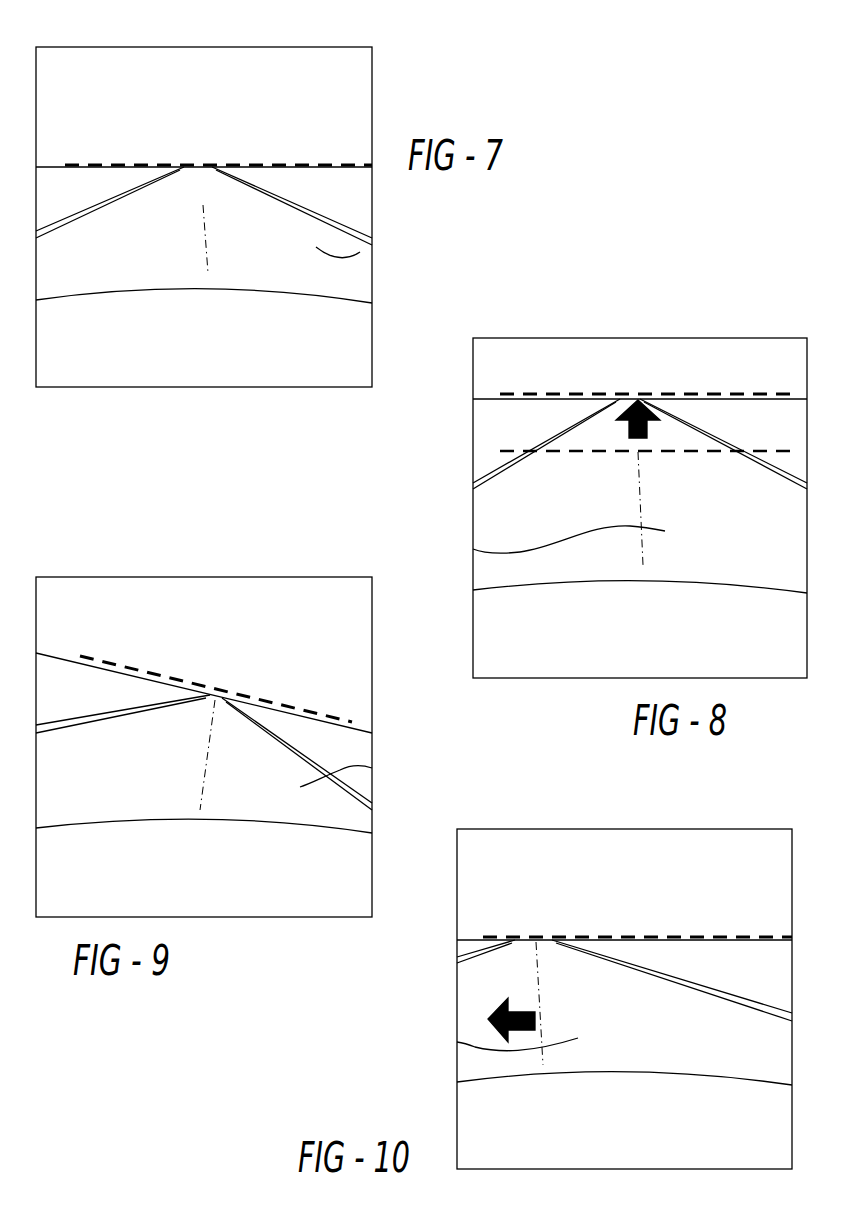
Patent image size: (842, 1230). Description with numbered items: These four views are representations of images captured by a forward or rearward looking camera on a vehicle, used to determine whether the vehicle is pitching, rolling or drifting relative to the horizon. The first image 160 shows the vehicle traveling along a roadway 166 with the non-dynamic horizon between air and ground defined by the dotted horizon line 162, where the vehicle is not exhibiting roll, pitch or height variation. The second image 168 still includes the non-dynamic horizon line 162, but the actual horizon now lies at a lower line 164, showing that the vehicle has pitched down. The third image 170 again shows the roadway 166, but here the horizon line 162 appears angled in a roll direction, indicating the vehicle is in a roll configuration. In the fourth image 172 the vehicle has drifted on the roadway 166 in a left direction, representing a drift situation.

In FIG. 7, the image 160 is at (400, 75).
In FIG. 7, the non-dynamic horizon line 162 is at (258, 165).
In FIG. 8, the non-dynamic horizon line 162 is at (668, 452).
In FIG. 9, the non-dynamic horizon line 162 is at (278, 707).
In FIG. 10, the non-dynamic horizon line 162 is at (652, 937).
In FIG. 8, the actual horizon line 164 is at (577, 393).
In FIG. 7, the roadway 166 is at (360, 252).
In FIG. 8, the roadway 166 is at (473, 549).
In FIG. 9, the roadway 166 is at (372, 768).
In FIG. 10, the roadway 166 is at (457, 1042).
In FIG. 8, the image 168 is at (653, 320).
In FIG. 9, the image 170 is at (283, 553).
In FIG. 10, the image 172 is at (570, 800).